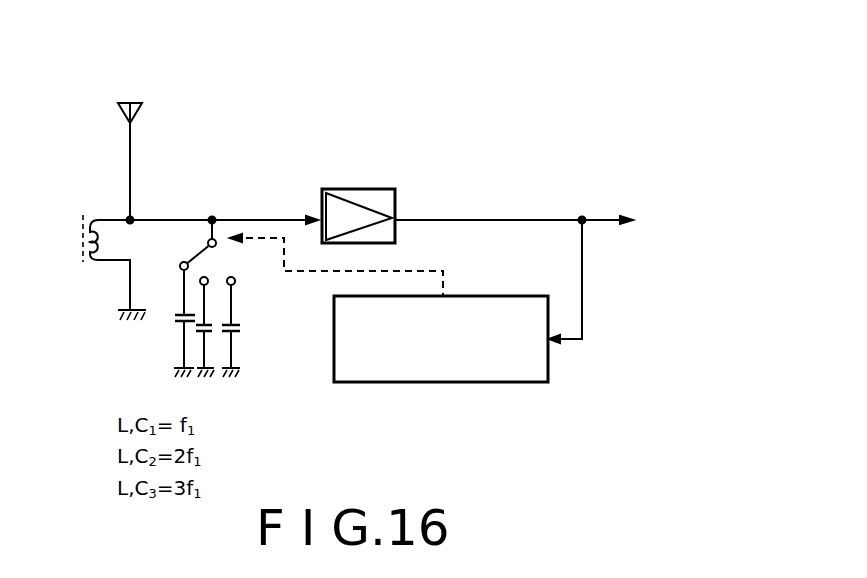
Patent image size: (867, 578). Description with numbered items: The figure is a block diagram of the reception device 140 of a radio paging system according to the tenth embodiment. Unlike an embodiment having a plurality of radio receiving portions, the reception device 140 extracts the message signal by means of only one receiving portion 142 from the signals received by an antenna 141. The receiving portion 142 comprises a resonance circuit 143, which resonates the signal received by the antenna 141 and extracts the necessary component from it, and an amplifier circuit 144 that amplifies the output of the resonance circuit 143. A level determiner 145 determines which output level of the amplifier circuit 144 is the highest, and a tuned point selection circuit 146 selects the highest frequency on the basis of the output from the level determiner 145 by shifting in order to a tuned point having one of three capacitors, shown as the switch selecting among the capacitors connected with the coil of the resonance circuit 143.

The reception device 140 is at (527, 117).
The antenna 141 is at (143, 110).
The receiving portion 142 is at (279, 186).
The resonance circuit 143 is at (90, 262).
The amplifier circuit 144 is at (370, 188).
The level determiner 145 is at (412, 383).
The tuned point selection circuit 146 is at (253, 262).